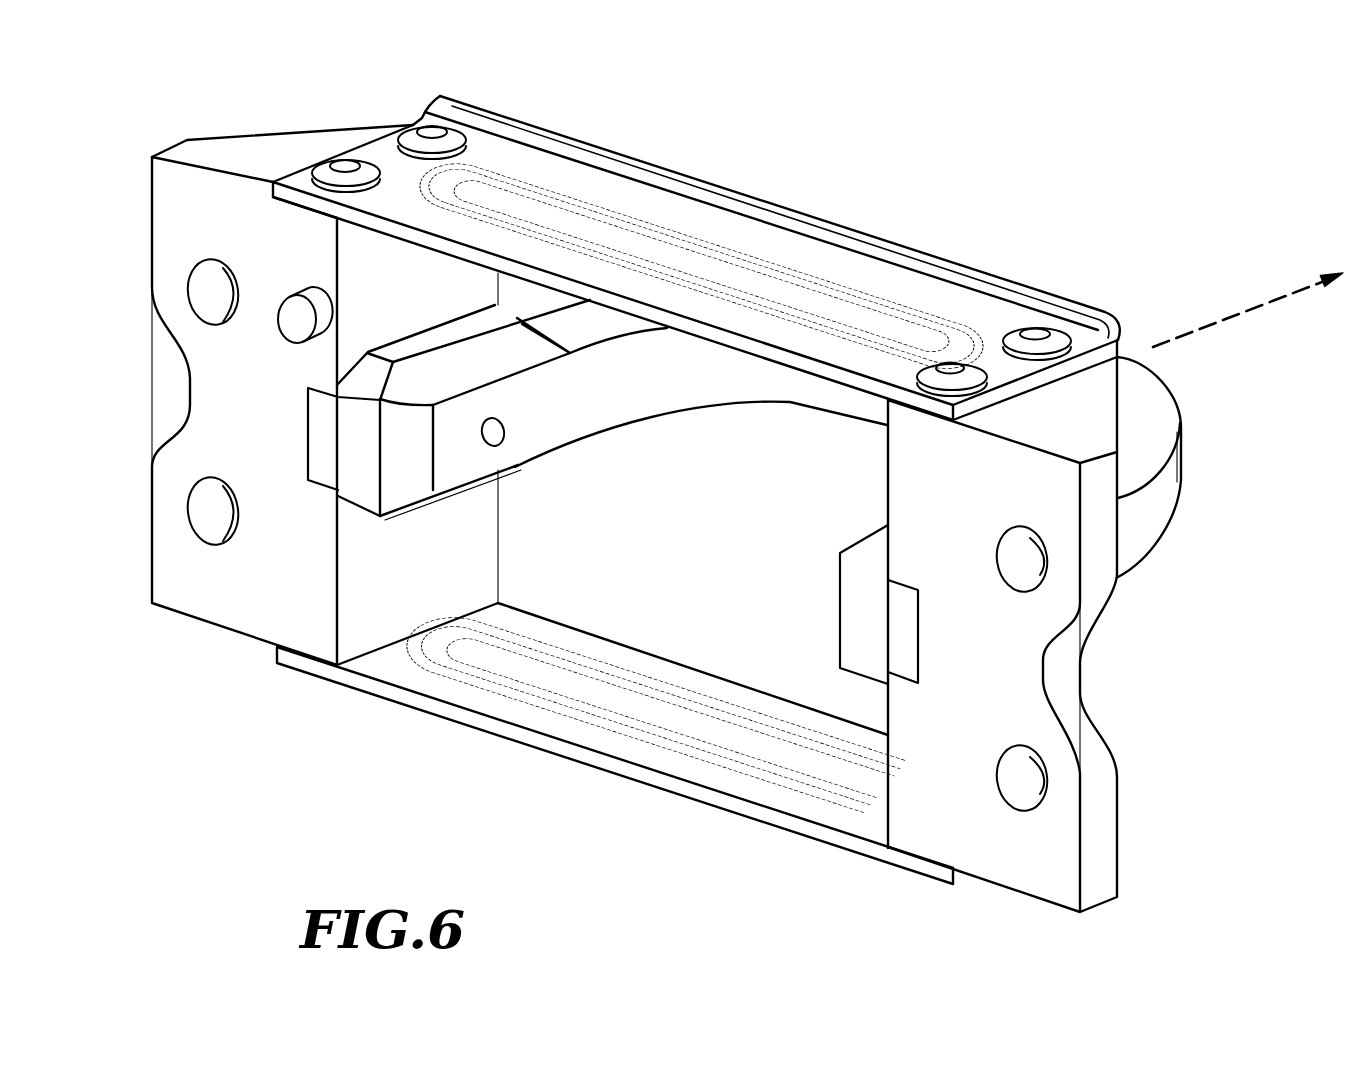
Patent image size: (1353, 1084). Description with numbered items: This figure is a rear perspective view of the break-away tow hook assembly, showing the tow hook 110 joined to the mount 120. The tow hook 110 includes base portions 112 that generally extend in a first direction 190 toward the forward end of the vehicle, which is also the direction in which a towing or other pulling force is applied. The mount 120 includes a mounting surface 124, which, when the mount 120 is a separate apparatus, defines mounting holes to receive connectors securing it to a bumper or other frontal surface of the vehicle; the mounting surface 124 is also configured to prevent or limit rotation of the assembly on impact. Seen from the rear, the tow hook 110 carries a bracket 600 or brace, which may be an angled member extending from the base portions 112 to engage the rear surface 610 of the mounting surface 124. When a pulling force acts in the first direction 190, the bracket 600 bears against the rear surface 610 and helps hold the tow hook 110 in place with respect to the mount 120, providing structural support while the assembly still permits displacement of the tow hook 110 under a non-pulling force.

The mount 120 is at (206, 122).
The mounting surface 124 is at (152, 212).
The tow hook 110 is at (1177, 403).
The base portion 112 is at (387, 502).
The first direction 190 is at (1247, 308).
The bracket 600 is at (323, 488).
The rear surface 610 is at (205, 586).